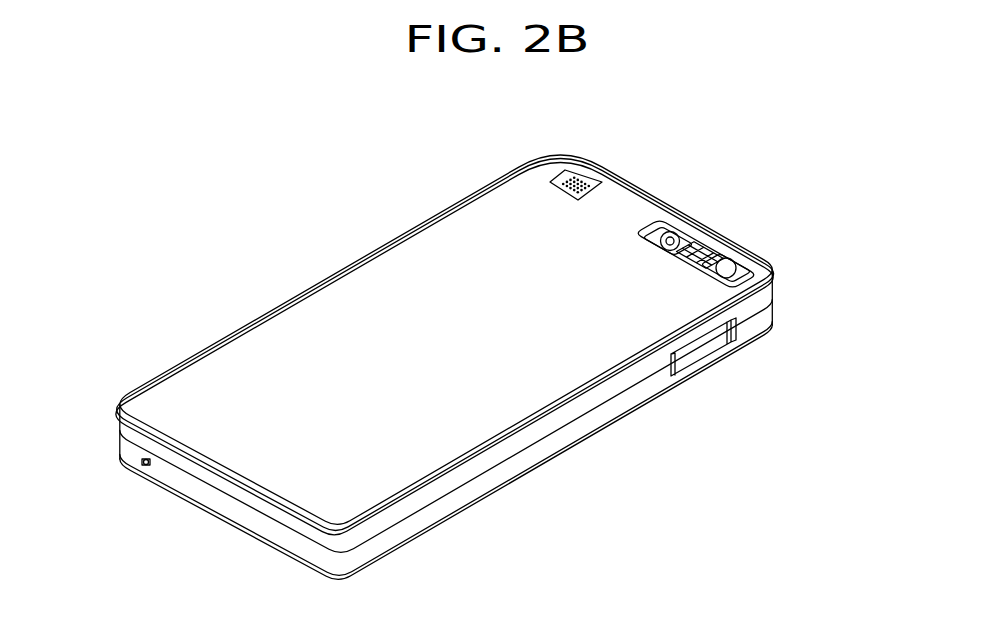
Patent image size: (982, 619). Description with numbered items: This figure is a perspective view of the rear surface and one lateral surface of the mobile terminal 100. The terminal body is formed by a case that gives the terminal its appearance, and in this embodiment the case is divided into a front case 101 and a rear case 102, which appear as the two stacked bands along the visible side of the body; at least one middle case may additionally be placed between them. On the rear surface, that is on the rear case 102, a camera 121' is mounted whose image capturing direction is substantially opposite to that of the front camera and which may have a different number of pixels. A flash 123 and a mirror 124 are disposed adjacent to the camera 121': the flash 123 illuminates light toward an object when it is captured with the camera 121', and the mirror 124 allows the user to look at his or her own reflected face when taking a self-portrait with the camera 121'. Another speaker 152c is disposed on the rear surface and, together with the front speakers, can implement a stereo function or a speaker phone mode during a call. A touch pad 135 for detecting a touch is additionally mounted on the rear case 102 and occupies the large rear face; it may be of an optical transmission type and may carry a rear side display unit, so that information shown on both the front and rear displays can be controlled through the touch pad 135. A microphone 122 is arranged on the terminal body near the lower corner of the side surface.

The mobile terminal 100 is at (410, 206).
The front case 101 is at (771, 322).
The rear case 102 is at (771, 300).
The camera 121' is at (696, 232).
The microphone 122 is at (143, 466).
The flash 123 is at (700, 252).
The mirror 124 is at (727, 265).
The touch pad 135 is at (370, 293).
The speaker 152c is at (597, 174).